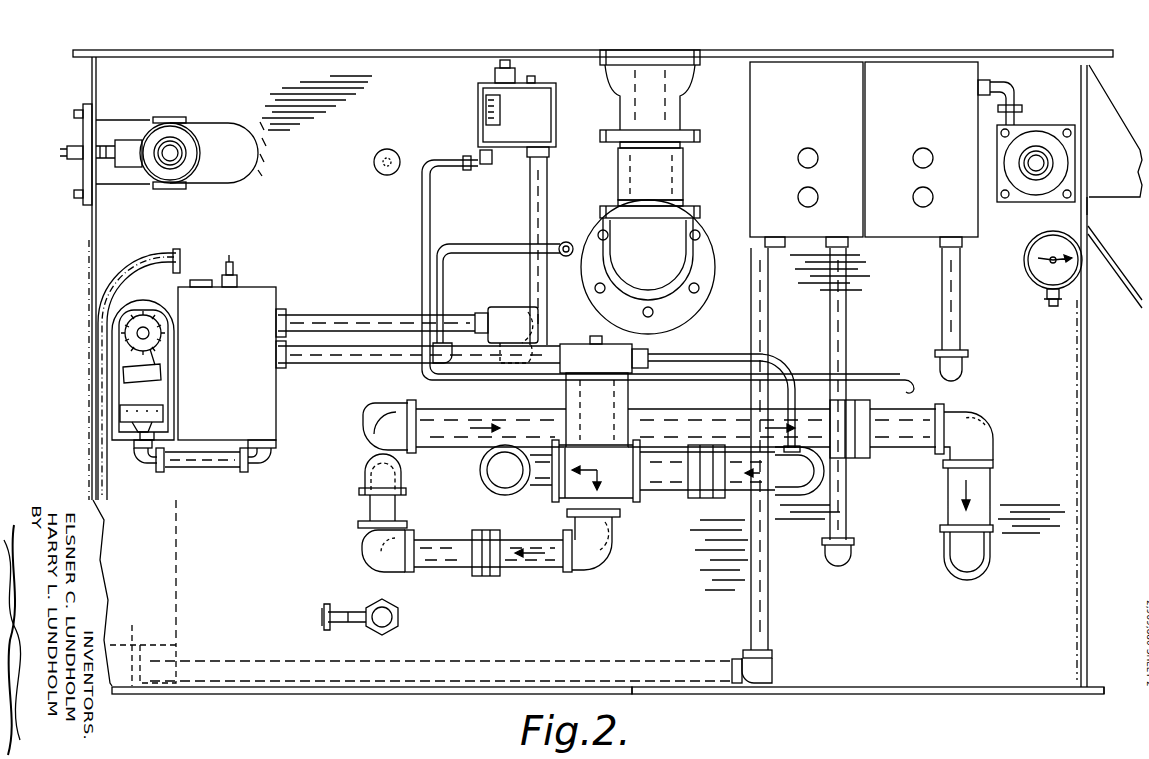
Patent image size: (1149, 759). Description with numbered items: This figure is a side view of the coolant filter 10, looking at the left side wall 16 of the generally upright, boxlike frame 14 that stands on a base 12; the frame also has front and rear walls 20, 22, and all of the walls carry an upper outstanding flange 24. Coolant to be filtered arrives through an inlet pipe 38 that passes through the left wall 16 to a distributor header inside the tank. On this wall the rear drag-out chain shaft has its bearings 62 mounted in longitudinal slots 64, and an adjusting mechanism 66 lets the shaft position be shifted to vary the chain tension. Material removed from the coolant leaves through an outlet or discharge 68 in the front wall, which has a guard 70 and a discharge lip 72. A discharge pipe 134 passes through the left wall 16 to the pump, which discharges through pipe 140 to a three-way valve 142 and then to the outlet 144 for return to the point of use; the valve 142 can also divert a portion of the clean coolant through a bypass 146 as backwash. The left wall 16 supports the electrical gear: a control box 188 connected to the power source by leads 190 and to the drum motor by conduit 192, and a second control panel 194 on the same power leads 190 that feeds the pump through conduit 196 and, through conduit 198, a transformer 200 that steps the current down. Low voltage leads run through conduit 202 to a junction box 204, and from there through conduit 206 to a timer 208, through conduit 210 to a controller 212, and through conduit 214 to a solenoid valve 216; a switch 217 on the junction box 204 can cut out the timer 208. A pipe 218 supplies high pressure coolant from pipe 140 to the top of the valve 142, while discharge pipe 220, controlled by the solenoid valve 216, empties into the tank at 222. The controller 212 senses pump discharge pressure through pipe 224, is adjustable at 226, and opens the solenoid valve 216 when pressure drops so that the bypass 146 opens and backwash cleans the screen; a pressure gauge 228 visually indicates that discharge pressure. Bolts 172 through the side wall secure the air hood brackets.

The coolant filter 10 is at (68, 412).
The base 12 is at (433, 692).
The frame 14 is at (1088, 478).
The left side wall 16 is at (885, 670).
The front wall 20 is at (1088, 380).
The rear wall 22 is at (88, 264).
The upper outstanding flange 24 is at (212, 50).
The inlet pipe 38 is at (648, 66).
The bearings 62 is at (190, 134).
The longitudinal slots 64 is at (214, 180).
The adjusting mechanism 66 is at (60, 152).
The outlet or discharge 68 is at (1092, 210).
The guard 70 is at (1106, 110).
The discharge lip 72 is at (1118, 252).
The discharge pipe 134 is at (372, 410).
The pipe 140 is at (740, 497).
The three-way valve 142 is at (632, 352).
The outlet or discharge 144 is at (490, 488).
The bypass 146 is at (546, 570).
The screws or bolts 172 is at (374, 158).
The control box or panel 188 is at (912, 70).
The leads 190 is at (1045, 110).
The conduit 192 is at (962, 318).
The second control panel 194 is at (790, 70).
The conduit 196 is at (846, 312).
The conduit 198 is at (750, 612).
The transformer 200 is at (132, 686).
The conduit 202 is at (98, 318).
The junction box 204 is at (246, 290).
The conduit 206 is at (182, 470).
The timer 208 is at (120, 358).
The conduit 210 is at (530, 205).
The controller 212 is at (540, 83).
The conduit 214 is at (368, 316).
The solenoid valve 216 is at (505, 307).
The switch 217 is at (233, 262).
The pipe 218 is at (738, 354).
The discharge pipe 220 is at (480, 248).
The tank discharge point 222 is at (590, 212).
The pipe 224 is at (450, 160).
The adjustment 226 is at (503, 66).
The pressure gauge 228 is at (1068, 285).